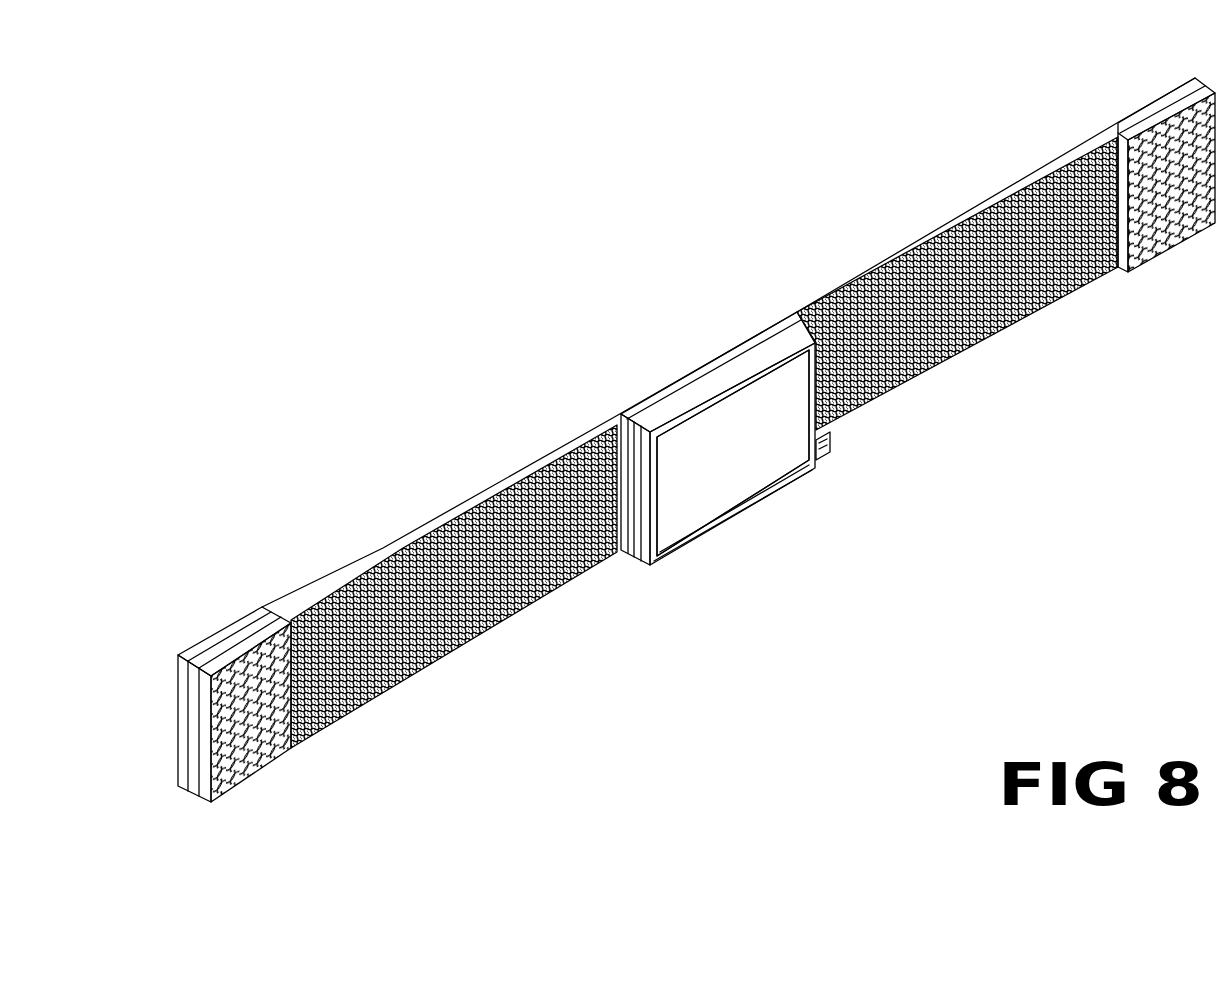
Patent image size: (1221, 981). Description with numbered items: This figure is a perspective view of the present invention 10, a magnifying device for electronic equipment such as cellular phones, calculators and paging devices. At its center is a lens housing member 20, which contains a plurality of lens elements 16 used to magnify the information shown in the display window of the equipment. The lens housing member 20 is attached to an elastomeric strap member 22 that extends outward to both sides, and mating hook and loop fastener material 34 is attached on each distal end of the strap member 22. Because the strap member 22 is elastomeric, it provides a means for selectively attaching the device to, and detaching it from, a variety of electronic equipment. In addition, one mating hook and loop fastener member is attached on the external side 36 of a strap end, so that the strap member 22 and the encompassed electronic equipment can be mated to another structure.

The present invention 10 is at (728, 303).
The lens elements 16 is at (735, 477).
The lens housing member 20 is at (640, 548).
The elastomeric strap member 22 is at (503, 478).
The hook and loop fastener material 34 is at (235, 622).
The external side 36 is at (203, 793).